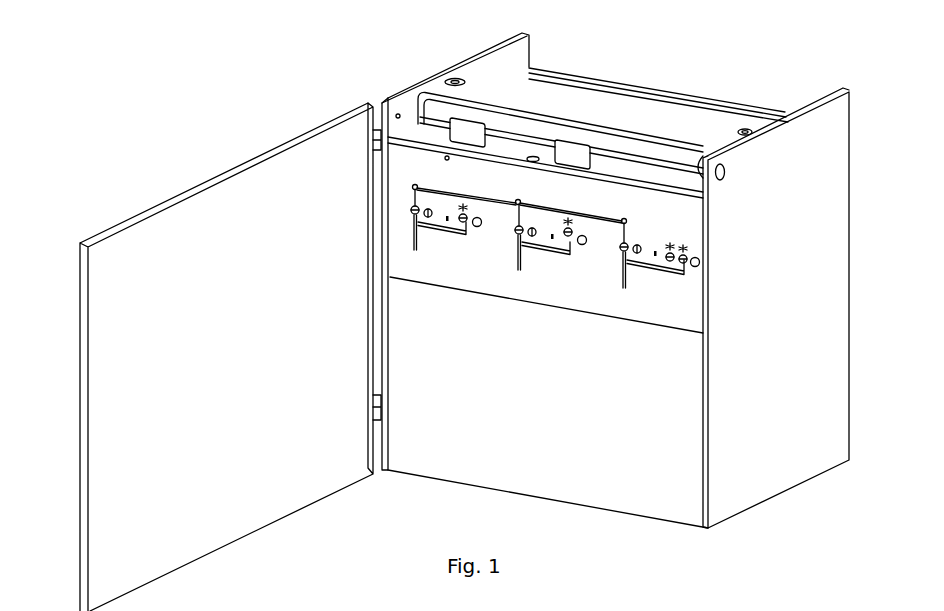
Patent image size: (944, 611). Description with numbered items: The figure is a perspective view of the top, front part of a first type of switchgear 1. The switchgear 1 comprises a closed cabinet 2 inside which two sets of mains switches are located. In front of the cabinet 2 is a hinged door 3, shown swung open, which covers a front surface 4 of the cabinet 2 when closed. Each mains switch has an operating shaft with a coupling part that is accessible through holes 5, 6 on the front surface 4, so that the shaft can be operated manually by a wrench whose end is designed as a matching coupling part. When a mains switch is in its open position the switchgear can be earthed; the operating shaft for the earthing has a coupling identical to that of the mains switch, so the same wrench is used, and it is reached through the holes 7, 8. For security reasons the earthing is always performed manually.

The switchgear 1 is at (318, 65).
The cabinet 2 is at (737, 121).
The hinged door 3 is at (140, 225).
The front surface 4 is at (475, 450).
The hole 5 is at (428, 209).
The hole 6 is at (534, 229).
The hole 7 is at (480, 219).
The hole 8 is at (584, 237).